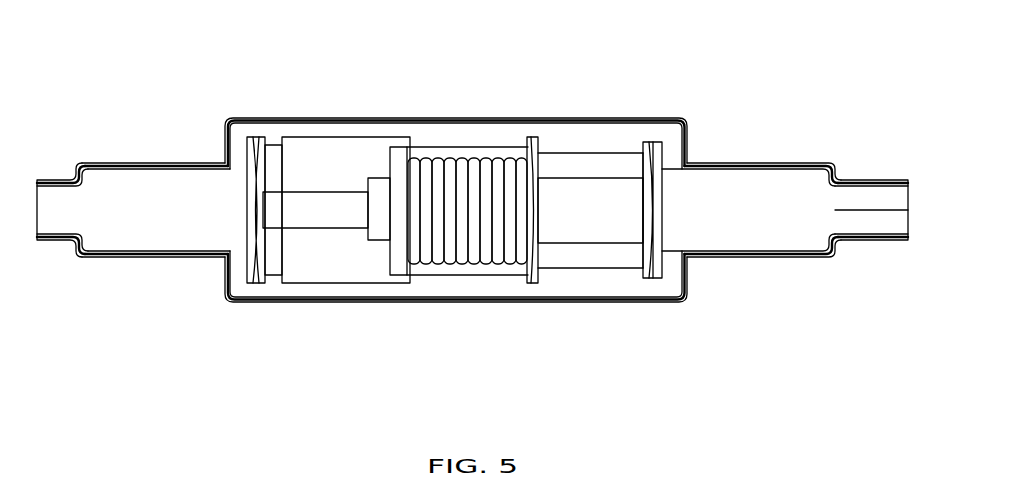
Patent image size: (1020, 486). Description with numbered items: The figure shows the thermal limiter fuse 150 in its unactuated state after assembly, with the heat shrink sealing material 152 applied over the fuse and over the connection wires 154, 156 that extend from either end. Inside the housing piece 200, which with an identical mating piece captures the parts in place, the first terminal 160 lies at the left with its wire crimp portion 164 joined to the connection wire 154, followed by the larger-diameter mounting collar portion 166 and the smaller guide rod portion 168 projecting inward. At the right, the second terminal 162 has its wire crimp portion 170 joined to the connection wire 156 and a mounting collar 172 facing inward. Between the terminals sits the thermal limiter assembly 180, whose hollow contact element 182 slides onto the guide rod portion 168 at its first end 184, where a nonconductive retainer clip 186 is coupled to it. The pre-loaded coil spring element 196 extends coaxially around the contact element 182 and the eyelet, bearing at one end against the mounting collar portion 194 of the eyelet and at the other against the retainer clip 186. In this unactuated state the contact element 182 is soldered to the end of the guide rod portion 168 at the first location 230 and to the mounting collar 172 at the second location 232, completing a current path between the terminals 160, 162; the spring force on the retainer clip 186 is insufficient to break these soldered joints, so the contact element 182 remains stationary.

The thermal limiter fuse 150 is at (678, 68).
The heat shrink sealing material 152 is at (487, 118).
The connection wire 154 is at (53, 197).
The connection wire 156 is at (880, 223).
The first terminal 160 is at (163, 228).
The second terminal 162 is at (773, 242).
The wire crimp portion 164 is at (140, 180).
The mounting collar portion 166 is at (255, 137).
The guide rod portion 168 is at (310, 212).
The wire crimp portion 170 is at (738, 185).
The mounting collar 172 is at (653, 270).
The thermal limiter assembly 180 is at (467, 153).
The contact element 182 is at (598, 222).
The first end 184 is at (377, 178).
The retainer clip 186 is at (400, 263).
The mounting collar portion 194 is at (532, 274).
The spring element 196 is at (477, 265).
The housing piece 200 is at (558, 143).
The first location 230 is at (368, 210).
The second location 232 is at (645, 212).